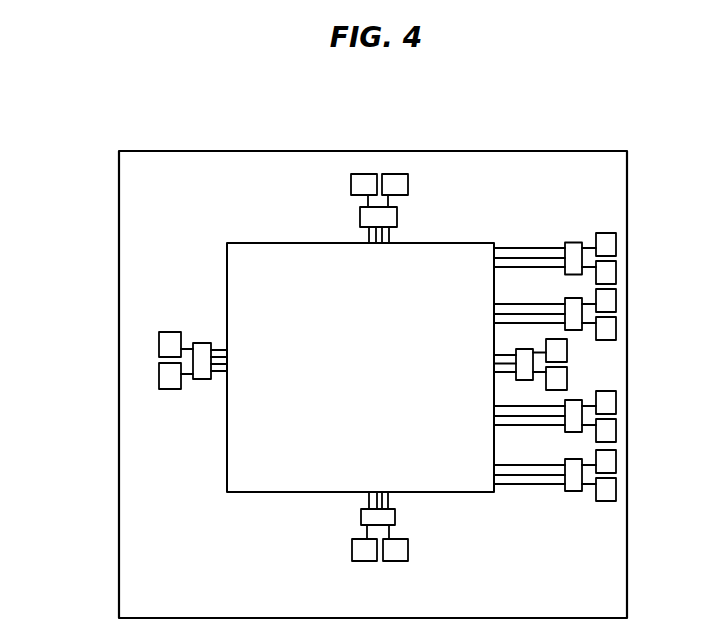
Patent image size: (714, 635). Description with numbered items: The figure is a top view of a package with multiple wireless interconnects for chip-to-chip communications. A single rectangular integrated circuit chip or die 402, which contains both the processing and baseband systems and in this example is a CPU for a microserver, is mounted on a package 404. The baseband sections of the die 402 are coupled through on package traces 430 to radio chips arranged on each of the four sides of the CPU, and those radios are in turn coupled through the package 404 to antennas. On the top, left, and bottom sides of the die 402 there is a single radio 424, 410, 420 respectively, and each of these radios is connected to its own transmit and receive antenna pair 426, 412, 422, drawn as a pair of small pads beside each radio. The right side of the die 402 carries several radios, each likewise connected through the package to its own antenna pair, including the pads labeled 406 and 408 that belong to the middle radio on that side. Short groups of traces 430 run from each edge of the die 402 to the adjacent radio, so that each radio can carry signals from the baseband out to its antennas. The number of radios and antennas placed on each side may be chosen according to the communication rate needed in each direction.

The integrated circuit chip or die 402 is at (263, 243).
The package 404 is at (119, 176).
The contact pad 406 is at (525, 347).
The contact pad 408 is at (567, 376).
The radio 410 is at (200, 380).
The Tx, Rx antenna pair 412 is at (168, 390).
The radio 420 is at (395, 513).
The Tx, Rx antenna pair 422 is at (408, 549).
The radio 424 is at (397, 217).
The Tx, Rx antenna pair 426 is at (408, 182).
The on package traces 430 is at (219, 350).